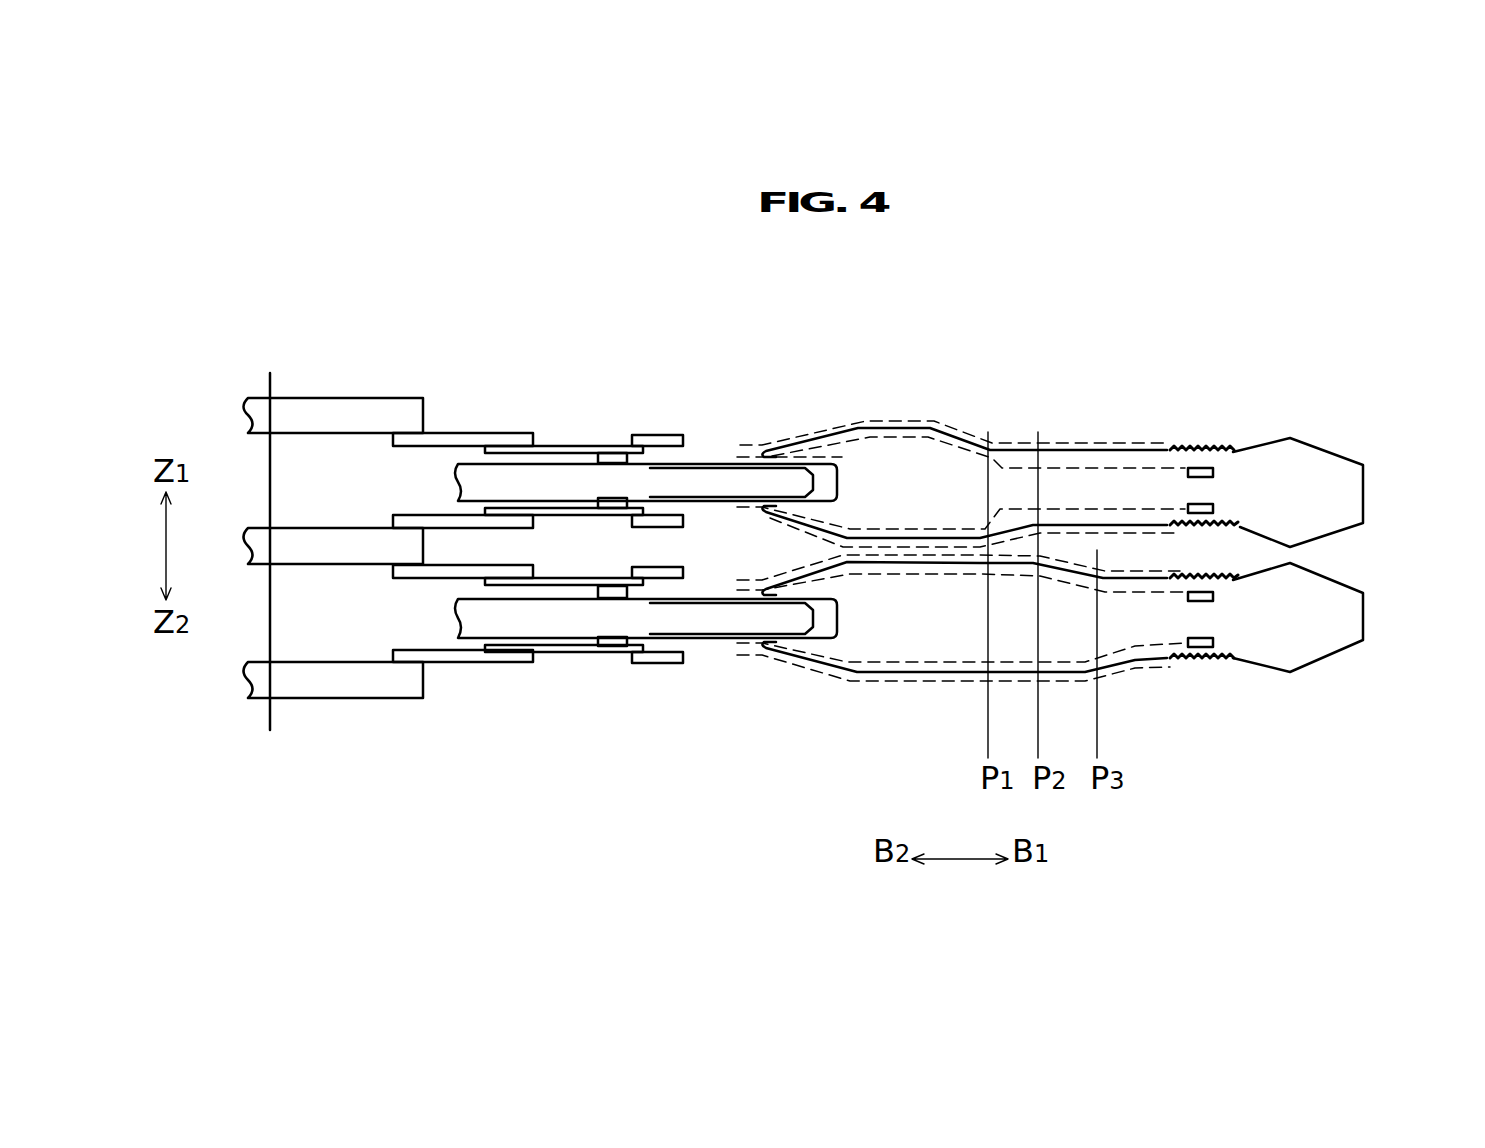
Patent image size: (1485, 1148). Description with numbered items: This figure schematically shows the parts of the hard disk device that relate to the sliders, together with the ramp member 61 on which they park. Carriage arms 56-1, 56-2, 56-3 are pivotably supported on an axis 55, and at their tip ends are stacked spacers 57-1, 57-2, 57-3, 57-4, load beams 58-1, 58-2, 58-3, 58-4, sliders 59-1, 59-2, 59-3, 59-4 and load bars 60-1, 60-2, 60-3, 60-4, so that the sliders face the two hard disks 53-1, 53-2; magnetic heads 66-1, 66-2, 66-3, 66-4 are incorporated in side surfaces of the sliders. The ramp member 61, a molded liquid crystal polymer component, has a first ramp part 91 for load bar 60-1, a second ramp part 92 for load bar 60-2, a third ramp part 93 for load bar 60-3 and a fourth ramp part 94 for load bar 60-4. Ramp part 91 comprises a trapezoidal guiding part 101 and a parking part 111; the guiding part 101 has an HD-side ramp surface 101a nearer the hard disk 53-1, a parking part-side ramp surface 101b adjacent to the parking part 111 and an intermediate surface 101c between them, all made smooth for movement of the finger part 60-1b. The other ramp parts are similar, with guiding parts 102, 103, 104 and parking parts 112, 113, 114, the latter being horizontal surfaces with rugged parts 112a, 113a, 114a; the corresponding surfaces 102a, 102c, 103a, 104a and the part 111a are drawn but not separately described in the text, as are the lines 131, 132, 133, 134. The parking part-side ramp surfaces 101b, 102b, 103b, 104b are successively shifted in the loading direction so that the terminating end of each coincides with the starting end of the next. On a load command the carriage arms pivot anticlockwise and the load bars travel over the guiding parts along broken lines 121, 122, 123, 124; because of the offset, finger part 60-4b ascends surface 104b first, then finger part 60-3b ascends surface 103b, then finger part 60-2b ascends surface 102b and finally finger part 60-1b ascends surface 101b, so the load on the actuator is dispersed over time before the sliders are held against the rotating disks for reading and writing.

The axis 55 is at (268, 487).
The carriage arm 56-1 is at (318, 398).
The carriage arm 56-2 is at (305, 528).
The carriage arm 56-3 is at (300, 662).
The spacer 57-1 is at (458, 433).
The spacer 57-2 is at (458, 513).
The spacer 57-3 is at (448, 573).
The spacer 57-4 is at (447, 660).
The load beam 58-1 is at (550, 443).
The load beam 58-2 is at (568, 507).
The load beam 58-3 is at (567, 586).
The load beam 58-4 is at (552, 652).
The slider 59-1 is at (610, 452).
The slider 59-2 is at (605, 513).
The slider 59-3 is at (610, 593).
The slider 59-4 is at (610, 647).
The load bar 60-1 is at (642, 433).
The finger part 60-1b is at (657, 435).
The load bar 60-2 is at (688, 520).
The finger part 60-2b is at (1240, 523).
The load bar 60-3 is at (695, 583).
The finger part 60-3b is at (1290, 563).
The load bar 60-4 is at (665, 658).
The finger part 60-4b is at (1215, 660).
The ramp member 61 is at (1330, 433).
The magnetic head 66-1 is at (628, 456).
The magnetic head 66-2 is at (647, 500).
The magnetic head 66-3 is at (640, 598).
The magnetic head 66-4 is at (627, 640).
The hard disk 53-1 is at (734, 498).
The hard disk 53-2 is at (753, 618).
The first ramp part 91 is at (1022, 443).
The second ramp part 92 is at (1162, 522).
The third ramp part 93 is at (1108, 585).
The fourth ramp part 94 is at (1062, 674).
The guiding part 101 is at (882, 416).
The HD-side ramp surface 101a is at (800, 437).
The parking part-side ramp surface 101b is at (958, 432).
The intermediate surface 101c is at (908, 428).
The guiding part 102 is at (917, 537).
The flexure end portion 102a is at (837, 535).
The parking part-side ramp surface 102b is at (1012, 535).
The flexure flat portion 102c is at (943, 540).
The guiding part 103 is at (920, 562).
The flexure end portion 103a is at (832, 568).
The parking part-side ramp surface 103b is at (1078, 565).
The guiding part 104 is at (933, 675).
The flexure end portion 104a is at (833, 670).
The parking part-side ramp surface 104b is at (1122, 580).
The parking part 111 is at (1137, 450).
The connection portion 111a is at (1185, 448).
The parking part 112 is at (1145, 527).
The rugged part 112a is at (1195, 531).
The parking part 113 is at (1170, 578).
The rugged part 113a is at (1185, 591).
The parking part 114 is at (1198, 663).
The rugged part 114a is at (1173, 663).
The broken line 121 is at (1062, 448).
The broken line 122 is at (1077, 527).
The broken line 123 is at (1018, 557).
The broken line 124 is at (1003, 682).
The bent portion 131 is at (1103, 448).
The bent portion 132 is at (1103, 527).
The bent portion 133 is at (957, 573).
The bent portion 134 is at (958, 681).